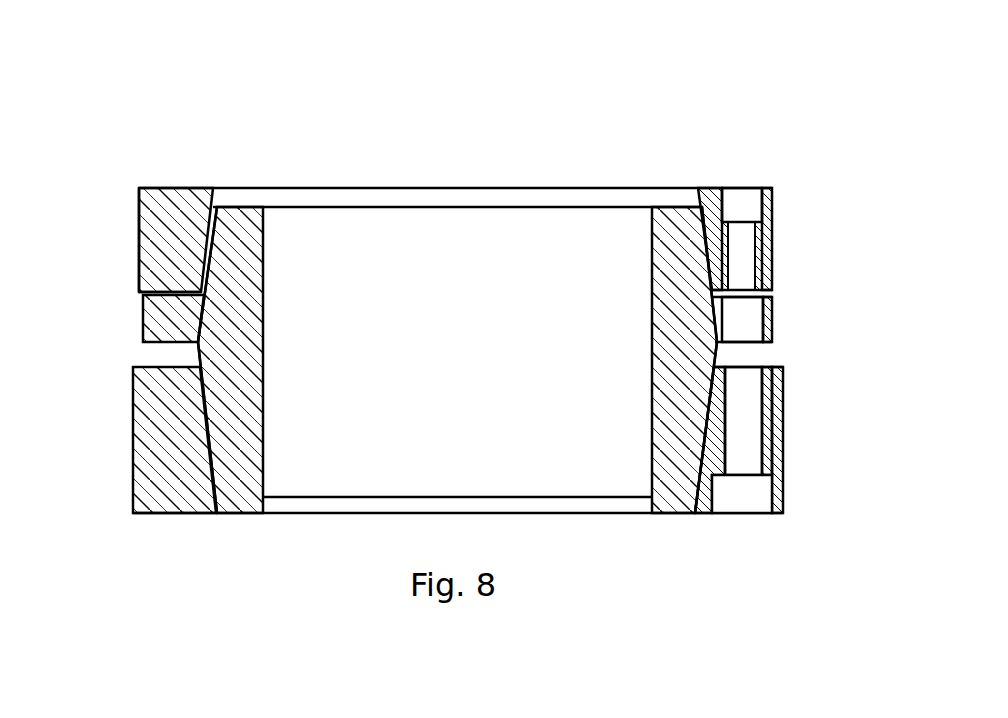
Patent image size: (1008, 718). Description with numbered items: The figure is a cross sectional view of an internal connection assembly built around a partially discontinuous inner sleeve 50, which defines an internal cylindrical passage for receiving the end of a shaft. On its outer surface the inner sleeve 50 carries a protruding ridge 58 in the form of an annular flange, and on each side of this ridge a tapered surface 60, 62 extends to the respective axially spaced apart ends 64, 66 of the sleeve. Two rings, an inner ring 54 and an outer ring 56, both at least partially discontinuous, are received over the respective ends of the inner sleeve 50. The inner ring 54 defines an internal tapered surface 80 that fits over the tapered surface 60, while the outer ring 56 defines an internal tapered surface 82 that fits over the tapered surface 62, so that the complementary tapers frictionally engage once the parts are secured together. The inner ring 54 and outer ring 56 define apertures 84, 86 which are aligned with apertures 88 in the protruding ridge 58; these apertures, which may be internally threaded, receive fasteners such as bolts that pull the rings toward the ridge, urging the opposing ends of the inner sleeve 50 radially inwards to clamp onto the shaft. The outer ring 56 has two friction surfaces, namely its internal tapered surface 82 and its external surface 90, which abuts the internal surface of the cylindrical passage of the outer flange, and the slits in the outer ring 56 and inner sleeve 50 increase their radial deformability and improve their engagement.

The inner sleeve 50 is at (245, 228).
The inner ring 54 is at (783, 502).
The outer ring 56 is at (173, 217).
The protruding ridge 58 is at (155, 320).
The tapered surface 60 is at (200, 427).
The tapered surface 62 is at (197, 265).
The end of the sleeve 64 is at (346, 538).
The end of the sleeve 66 is at (444, 165).
The internal tapered surface 80 is at (213, 435).
The internal tapered surface 82 is at (214, 243).
The aperture 84 is at (750, 430).
The aperture 86 is at (753, 253).
The aperture 88 is at (742, 327).
The external surface 90 is at (135, 228).